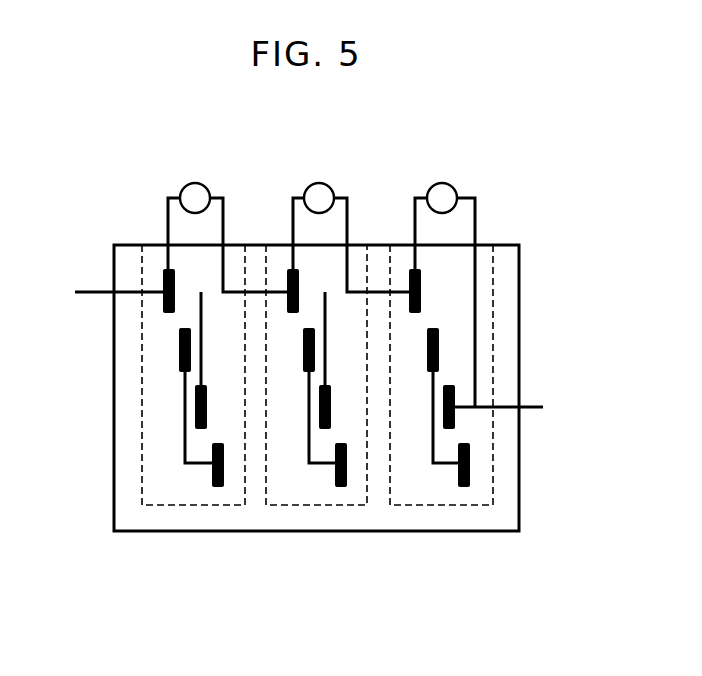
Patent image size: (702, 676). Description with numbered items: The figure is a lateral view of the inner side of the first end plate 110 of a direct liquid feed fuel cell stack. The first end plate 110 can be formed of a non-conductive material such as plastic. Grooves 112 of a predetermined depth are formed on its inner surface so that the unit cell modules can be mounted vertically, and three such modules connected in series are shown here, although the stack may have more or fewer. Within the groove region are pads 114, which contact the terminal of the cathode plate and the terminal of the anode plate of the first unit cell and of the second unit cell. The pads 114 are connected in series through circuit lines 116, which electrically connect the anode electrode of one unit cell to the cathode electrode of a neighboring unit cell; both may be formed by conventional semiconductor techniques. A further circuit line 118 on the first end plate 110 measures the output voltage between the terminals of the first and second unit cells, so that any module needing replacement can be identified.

The first end plate 110 is at (356, 232).
The grooves 112 is at (142, 262).
The pads 114 is at (162, 303).
The circuit lines 116 is at (184, 430).
The circuit line 118 is at (446, 184).